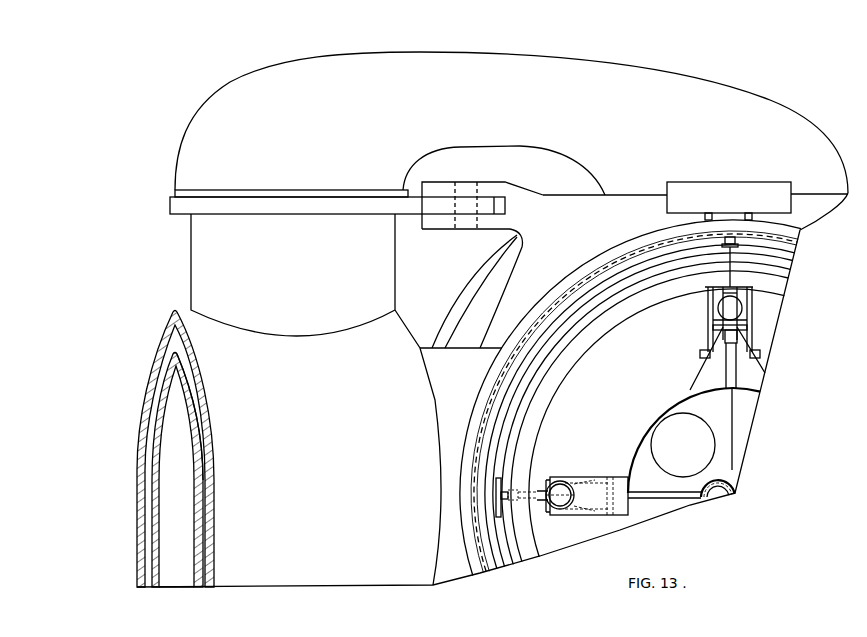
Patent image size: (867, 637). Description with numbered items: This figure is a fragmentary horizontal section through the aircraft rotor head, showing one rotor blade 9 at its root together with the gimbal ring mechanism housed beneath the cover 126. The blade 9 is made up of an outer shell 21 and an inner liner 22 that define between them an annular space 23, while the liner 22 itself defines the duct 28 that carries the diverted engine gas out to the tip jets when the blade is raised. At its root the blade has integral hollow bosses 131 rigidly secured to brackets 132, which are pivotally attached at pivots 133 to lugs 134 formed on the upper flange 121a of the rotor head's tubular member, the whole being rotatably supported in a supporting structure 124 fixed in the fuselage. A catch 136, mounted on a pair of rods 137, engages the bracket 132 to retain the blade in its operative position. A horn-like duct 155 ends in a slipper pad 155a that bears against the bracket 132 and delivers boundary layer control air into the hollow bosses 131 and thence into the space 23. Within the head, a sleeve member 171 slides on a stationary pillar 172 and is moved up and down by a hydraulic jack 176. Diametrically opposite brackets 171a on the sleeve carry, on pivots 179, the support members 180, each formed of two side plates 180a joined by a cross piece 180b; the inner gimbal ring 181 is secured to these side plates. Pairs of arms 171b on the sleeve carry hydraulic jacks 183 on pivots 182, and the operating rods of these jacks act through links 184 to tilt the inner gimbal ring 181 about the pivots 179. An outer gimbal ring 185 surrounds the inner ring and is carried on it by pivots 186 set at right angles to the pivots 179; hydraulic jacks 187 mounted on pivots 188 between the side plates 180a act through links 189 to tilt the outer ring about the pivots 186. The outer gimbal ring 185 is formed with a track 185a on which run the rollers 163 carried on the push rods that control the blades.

The horn-like duct 155 is at (443, 62).
The slipper pad 155a is at (173, 191).
The bracket 132 is at (172, 210).
The hollow boss 131 is at (292, 275).
The pivot 133 is at (472, 227).
The lug 134 is at (518, 190).
The upper flange 121a is at (596, 232).
The catch 136 is at (677, 185).
The rod 137 is at (748, 212).
The rotor blade 9 is at (330, 477).
The outer shell 21 is at (164, 331).
The inner liner 22 is at (162, 393).
The annular space 23 is at (180, 352).
The duct 28 is at (182, 487).
The supporting structure 124 is at (467, 292).
The cover 126 is at (530, 328).
The track 185a is at (593, 278).
The outer gimbal ring 185 is at (583, 303).
The inner gimbal ring 181 is at (570, 356).
The roller 163 is at (736, 244).
The link 189 is at (718, 293).
The hydraulic jack 187 is at (716, 306).
The pivot 188 is at (748, 310).
The support member 180 is at (757, 333).
The cross piece 180b is at (752, 320).
The pivot 179 is at (728, 336).
The side plate 180a is at (708, 348).
The bracket 171a is at (700, 379).
The sleeve member 171 is at (650, 428).
The stationary pillar 172 is at (737, 468).
The hydraulic jack 176 is at (730, 489).
The pivot 182 is at (558, 478).
The arm 171b is at (590, 483).
The hydraulic jack 183 is at (549, 490).
The pivot 186 is at (515, 498).
The link 184 is at (545, 508).